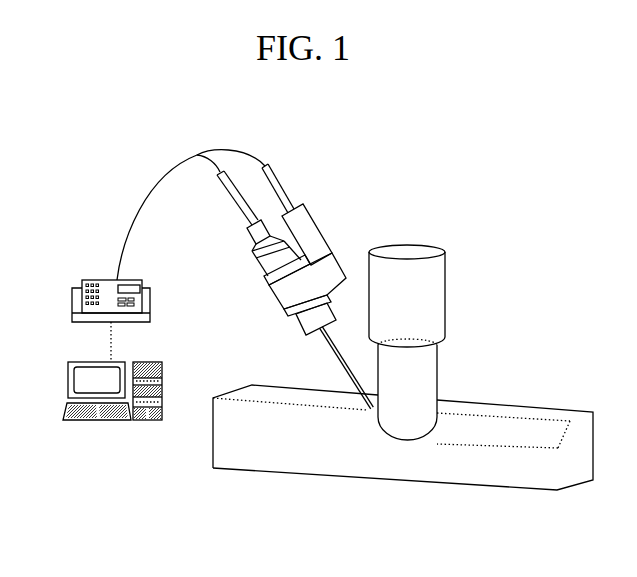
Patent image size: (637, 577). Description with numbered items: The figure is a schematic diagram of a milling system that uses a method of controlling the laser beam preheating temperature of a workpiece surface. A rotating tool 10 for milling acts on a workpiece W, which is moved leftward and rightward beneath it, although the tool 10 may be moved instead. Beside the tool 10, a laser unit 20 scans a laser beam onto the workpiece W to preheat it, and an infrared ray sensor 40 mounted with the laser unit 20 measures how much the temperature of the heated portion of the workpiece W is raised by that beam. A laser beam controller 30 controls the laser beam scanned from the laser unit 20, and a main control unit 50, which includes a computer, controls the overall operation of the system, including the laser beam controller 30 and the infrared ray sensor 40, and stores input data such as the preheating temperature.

The tool 10 is at (437, 290).
The laser unit 20 is at (272, 268).
The laser beam controller 30 is at (82, 301).
The infrared ray sensor 40 is at (310, 230).
The main control unit 50 is at (72, 375).
The workpiece W is at (500, 474).